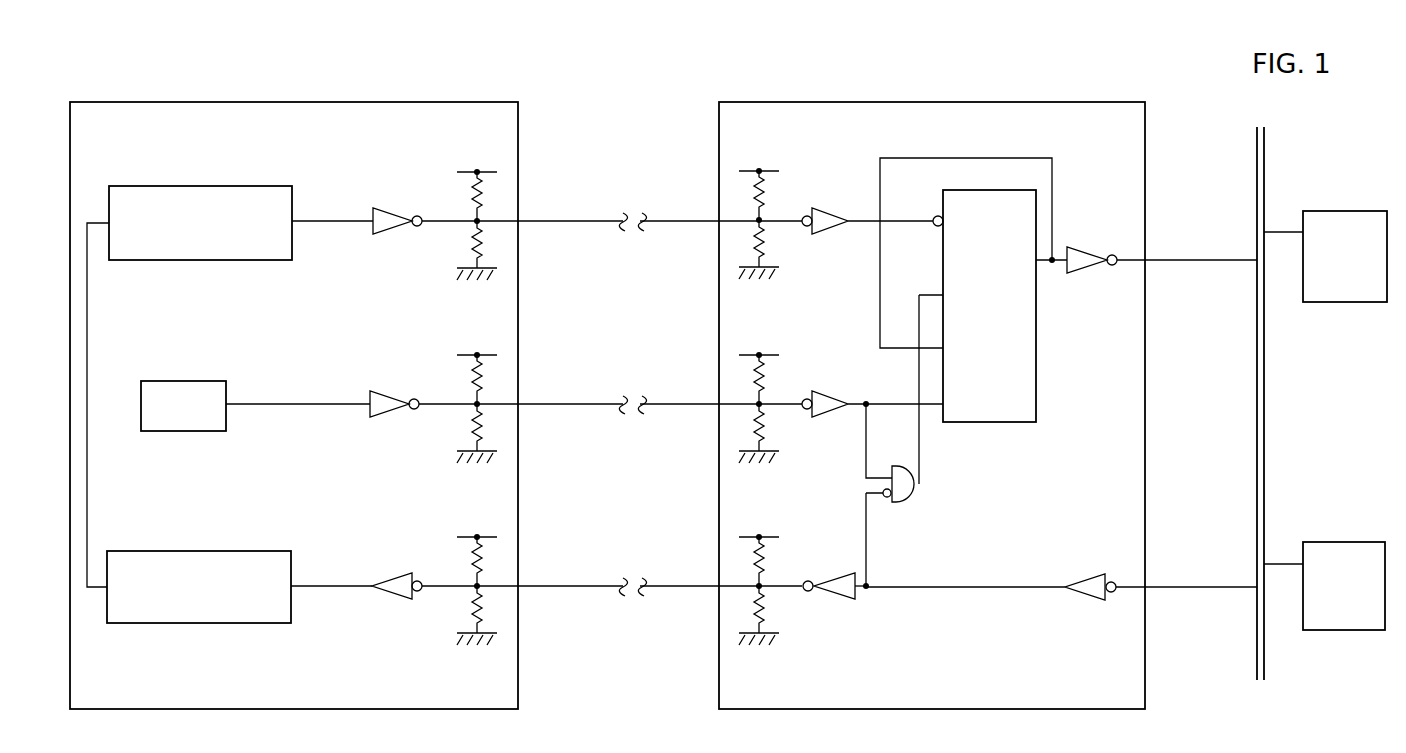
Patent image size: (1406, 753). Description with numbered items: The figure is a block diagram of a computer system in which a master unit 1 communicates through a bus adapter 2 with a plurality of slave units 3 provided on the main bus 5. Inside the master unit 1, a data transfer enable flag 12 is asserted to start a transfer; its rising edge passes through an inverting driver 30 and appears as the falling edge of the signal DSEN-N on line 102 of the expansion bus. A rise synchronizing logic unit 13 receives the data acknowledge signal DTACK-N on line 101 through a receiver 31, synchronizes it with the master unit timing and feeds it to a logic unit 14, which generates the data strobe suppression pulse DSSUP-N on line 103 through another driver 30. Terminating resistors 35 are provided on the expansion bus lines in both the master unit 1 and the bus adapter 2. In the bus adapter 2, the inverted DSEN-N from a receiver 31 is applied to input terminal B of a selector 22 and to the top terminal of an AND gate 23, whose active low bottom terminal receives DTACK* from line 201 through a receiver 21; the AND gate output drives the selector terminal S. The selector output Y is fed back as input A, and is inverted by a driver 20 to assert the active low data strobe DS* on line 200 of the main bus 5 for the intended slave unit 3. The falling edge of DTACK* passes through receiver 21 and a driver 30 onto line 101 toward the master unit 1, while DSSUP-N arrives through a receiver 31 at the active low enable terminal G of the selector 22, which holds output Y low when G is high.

The master unit 1 is at (405, 102).
The bus adapter 2 is at (1043, 102).
The slave unit 3 is at (1340, 302).
The main bus 5 is at (1265, 160).
The data transfer enable flag 12 is at (226, 431).
The rise synchronizing logic unit 13 is at (107, 623).
The logic unit 14 is at (288, 186).
The driver 20 is at (1108, 230).
The receiver 21 is at (1082, 571).
The selector 22 is at (1022, 190).
The AND gate 23 is at (914, 490).
The driver 30 is at (384, 205).
The receiver 31 is at (390, 571).
The terminating resistor 35 is at (495, 172).
The line 101 is at (600, 591).
The line 102 is at (598, 409).
The line 103 is at (598, 226).
The line 200 is at (1200, 264).
The line 201 is at (1196, 592).